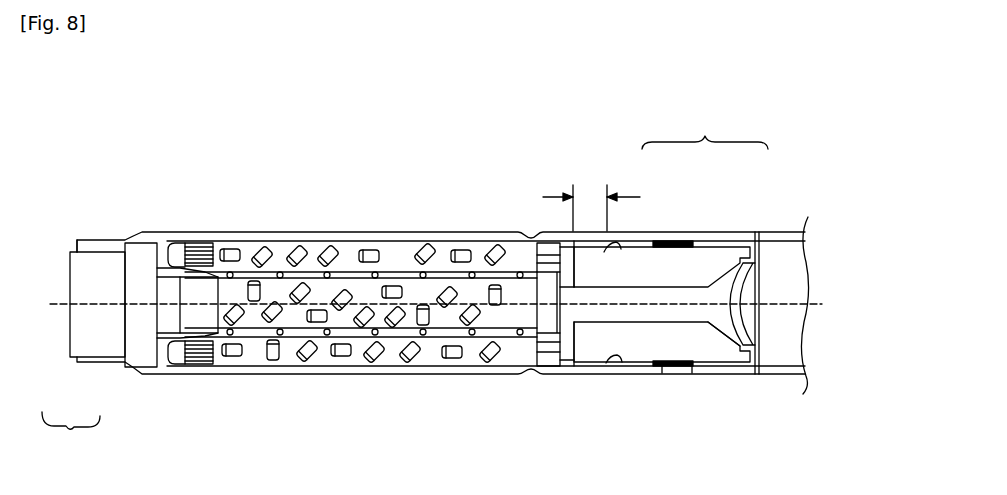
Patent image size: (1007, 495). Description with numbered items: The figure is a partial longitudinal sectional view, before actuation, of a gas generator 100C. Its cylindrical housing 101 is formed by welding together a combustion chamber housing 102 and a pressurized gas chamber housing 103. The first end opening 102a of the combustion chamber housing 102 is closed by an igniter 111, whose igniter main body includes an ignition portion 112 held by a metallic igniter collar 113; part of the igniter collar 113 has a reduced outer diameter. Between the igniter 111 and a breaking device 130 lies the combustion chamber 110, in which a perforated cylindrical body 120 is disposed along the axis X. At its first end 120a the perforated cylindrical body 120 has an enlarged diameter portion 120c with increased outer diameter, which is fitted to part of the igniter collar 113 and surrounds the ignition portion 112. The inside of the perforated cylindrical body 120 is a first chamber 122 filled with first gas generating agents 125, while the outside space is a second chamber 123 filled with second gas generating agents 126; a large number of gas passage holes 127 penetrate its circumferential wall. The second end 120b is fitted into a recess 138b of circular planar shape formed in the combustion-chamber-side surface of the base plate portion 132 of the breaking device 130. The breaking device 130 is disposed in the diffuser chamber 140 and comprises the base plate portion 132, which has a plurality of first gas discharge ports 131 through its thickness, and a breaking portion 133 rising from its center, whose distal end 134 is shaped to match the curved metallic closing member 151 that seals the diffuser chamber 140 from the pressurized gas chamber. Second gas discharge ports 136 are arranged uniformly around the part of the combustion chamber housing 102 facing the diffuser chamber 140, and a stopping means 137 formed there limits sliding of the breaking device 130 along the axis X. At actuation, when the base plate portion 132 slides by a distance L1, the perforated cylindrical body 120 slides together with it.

The gas generator 100C is at (328, 226).
The cylindrical housing 101 is at (705, 131).
The combustion chamber housing 102 is at (648, 231).
The first end opening 102a is at (74, 250).
The pressurized gas chamber housing 103 is at (786, 231).
The combustion chamber 110 is at (397, 250).
The igniter 111 is at (71, 432).
The ignition portion 112 is at (200, 315).
The igniter collar 113 is at (138, 312).
The perforated cylindrical body 120 is at (287, 266).
The first end 120a is at (155, 265).
The second end 120b is at (565, 248).
The enlarged diameter portion 120c is at (169, 256).
The first chamber 122 is at (292, 304).
The second chamber 123 is at (397, 357).
The first gas generating agents 125 is at (354, 322).
The second gas generating agents 126 is at (450, 359).
The gas passage holes 127 is at (475, 271).
The breaking device 130 is at (645, 336).
The first gas discharge ports 131 is at (575, 344).
The base plate portion 132 is at (568, 357).
The breaking portion 133 is at (702, 325).
The distal end 134 is at (755, 328).
The second gas discharge ports 136 is at (681, 238).
The stopping means 137 is at (606, 252).
The recess 138b is at (566, 353).
The diffuser chamber 140 is at (676, 276).
The closing member 151 is at (757, 291).
The sliding distance L1 is at (592, 188).
The axis X is at (445, 305).